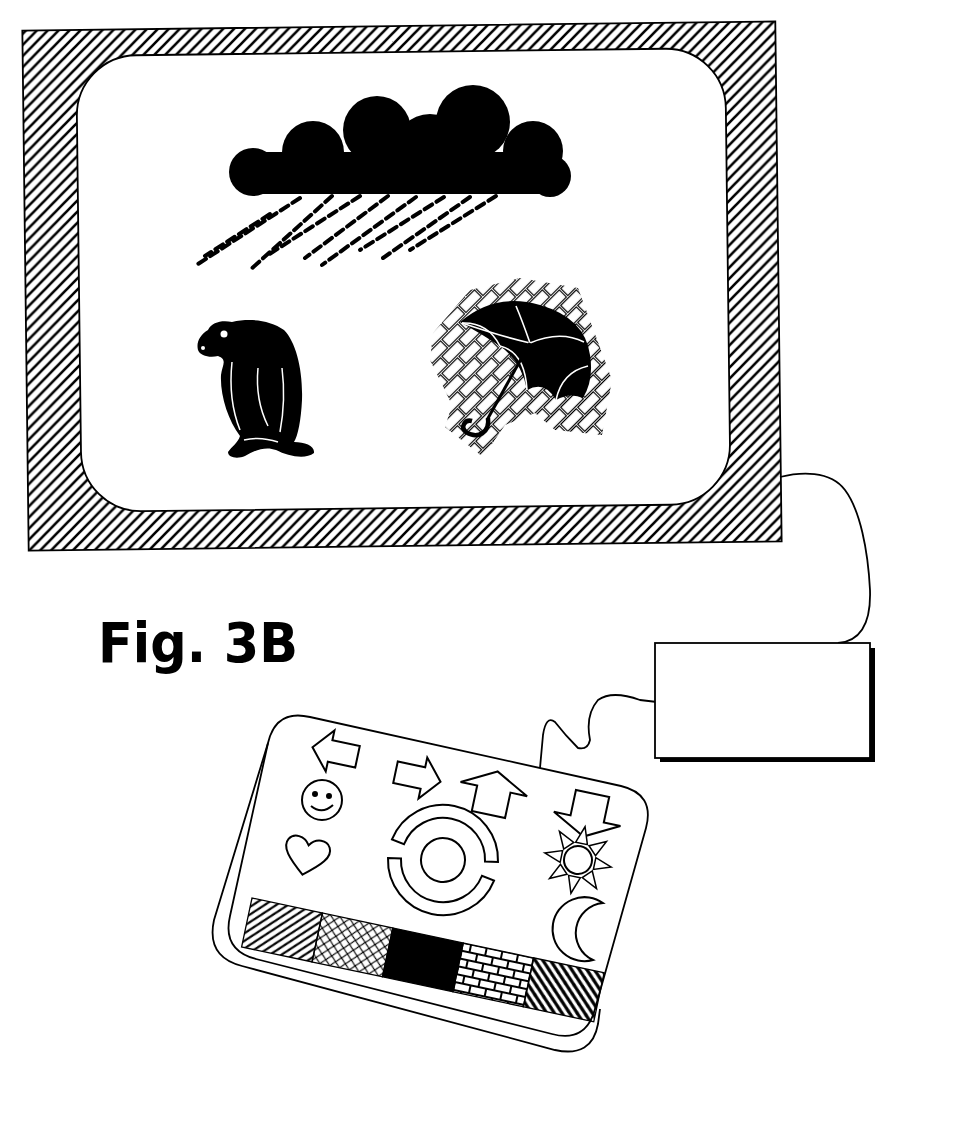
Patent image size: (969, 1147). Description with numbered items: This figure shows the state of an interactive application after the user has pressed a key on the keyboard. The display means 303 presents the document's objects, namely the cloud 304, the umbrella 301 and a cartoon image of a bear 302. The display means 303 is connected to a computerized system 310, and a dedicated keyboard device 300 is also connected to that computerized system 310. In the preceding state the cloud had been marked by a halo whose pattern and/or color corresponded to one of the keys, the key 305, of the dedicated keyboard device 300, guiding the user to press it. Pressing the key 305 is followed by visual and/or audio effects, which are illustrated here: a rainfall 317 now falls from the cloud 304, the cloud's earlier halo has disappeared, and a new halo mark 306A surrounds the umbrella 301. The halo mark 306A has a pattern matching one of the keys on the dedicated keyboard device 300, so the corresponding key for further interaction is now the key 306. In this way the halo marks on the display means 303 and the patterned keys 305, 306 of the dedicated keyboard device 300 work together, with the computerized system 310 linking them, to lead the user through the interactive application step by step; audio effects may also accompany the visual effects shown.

The dedicated keyboard device 300 is at (422, 915).
The umbrella 301 is at (594, 352).
The cartoon image (a bear) 302 is at (297, 341).
The display means 303 is at (794, 331).
The cloud 304 is at (541, 107).
The key 305 is at (334, 970).
The key 306 is at (473, 1000).
The halo mark 306A is at (587, 296).
The computerized system 310 is at (810, 770).
The rainfall 317 is at (472, 236).